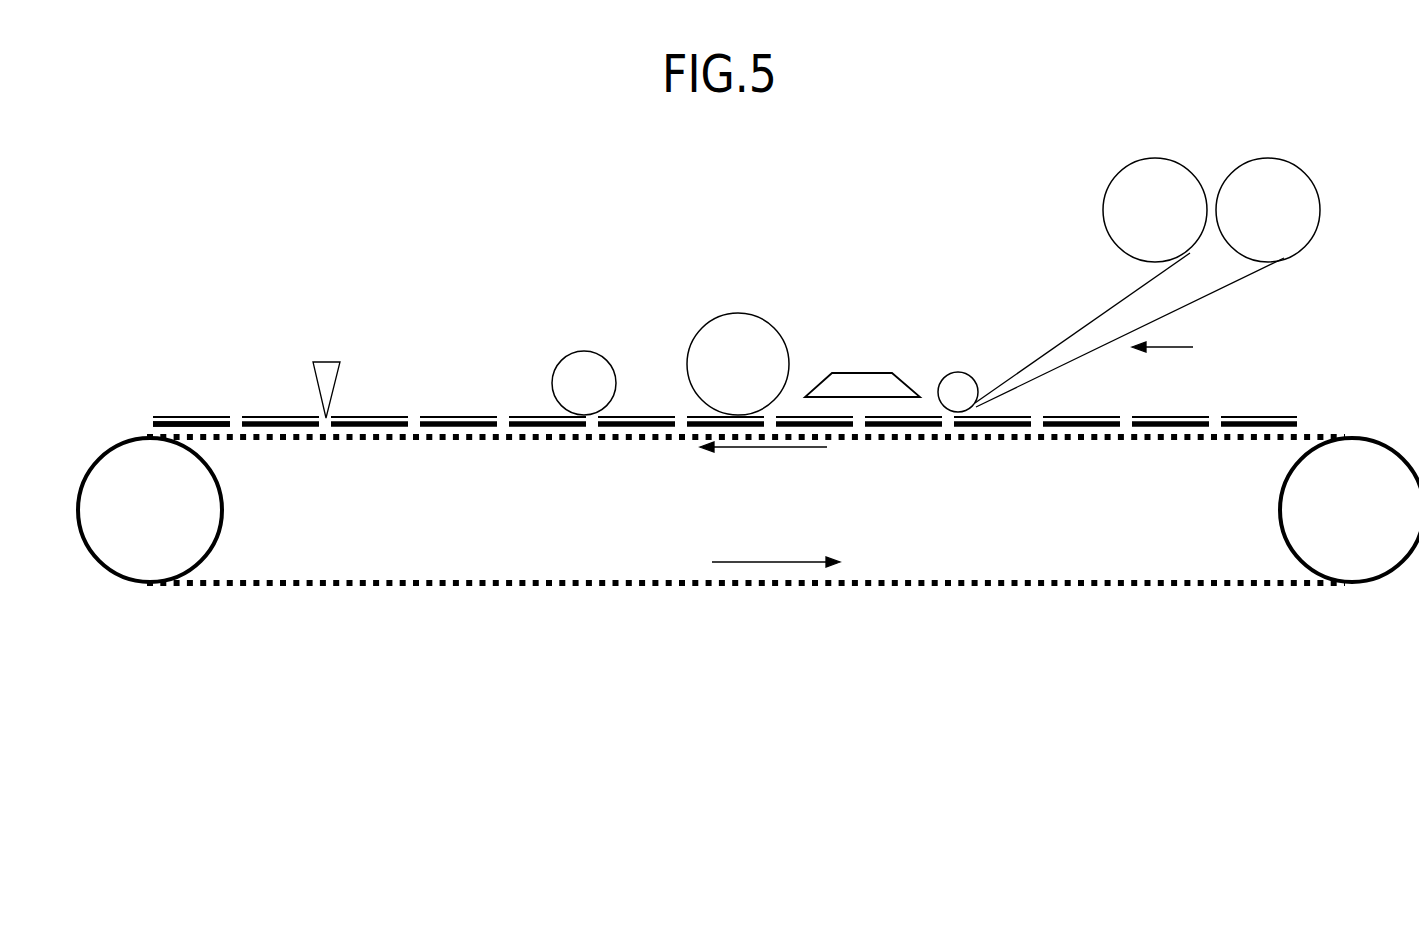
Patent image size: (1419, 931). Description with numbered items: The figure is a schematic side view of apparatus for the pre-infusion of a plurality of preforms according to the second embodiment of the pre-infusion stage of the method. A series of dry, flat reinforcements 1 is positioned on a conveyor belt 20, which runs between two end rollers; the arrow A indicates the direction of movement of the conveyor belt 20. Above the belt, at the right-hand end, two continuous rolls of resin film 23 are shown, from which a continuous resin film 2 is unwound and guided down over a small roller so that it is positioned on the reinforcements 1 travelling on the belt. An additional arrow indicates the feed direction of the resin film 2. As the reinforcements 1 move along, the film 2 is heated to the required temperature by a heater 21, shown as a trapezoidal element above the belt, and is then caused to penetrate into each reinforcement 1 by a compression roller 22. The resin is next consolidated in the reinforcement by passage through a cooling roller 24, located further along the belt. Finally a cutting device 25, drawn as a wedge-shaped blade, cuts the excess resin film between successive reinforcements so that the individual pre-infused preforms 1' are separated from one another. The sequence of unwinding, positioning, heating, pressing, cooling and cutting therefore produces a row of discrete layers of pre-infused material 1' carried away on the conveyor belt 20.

The dry reinforcement 1 is at (725, 466).
The pre-infused preform 1' is at (225, 464).
The resin film 2 is at (1176, 348).
The conveyor belt 20 is at (612, 592).
The heater 21 is at (856, 346).
The compression roller 22 is at (718, 326).
The roll of resin film 23 is at (1248, 136).
The cooling roller 24 is at (574, 362).
The cutting device 25 is at (280, 355).
The direction of movement arrow A is at (768, 452).